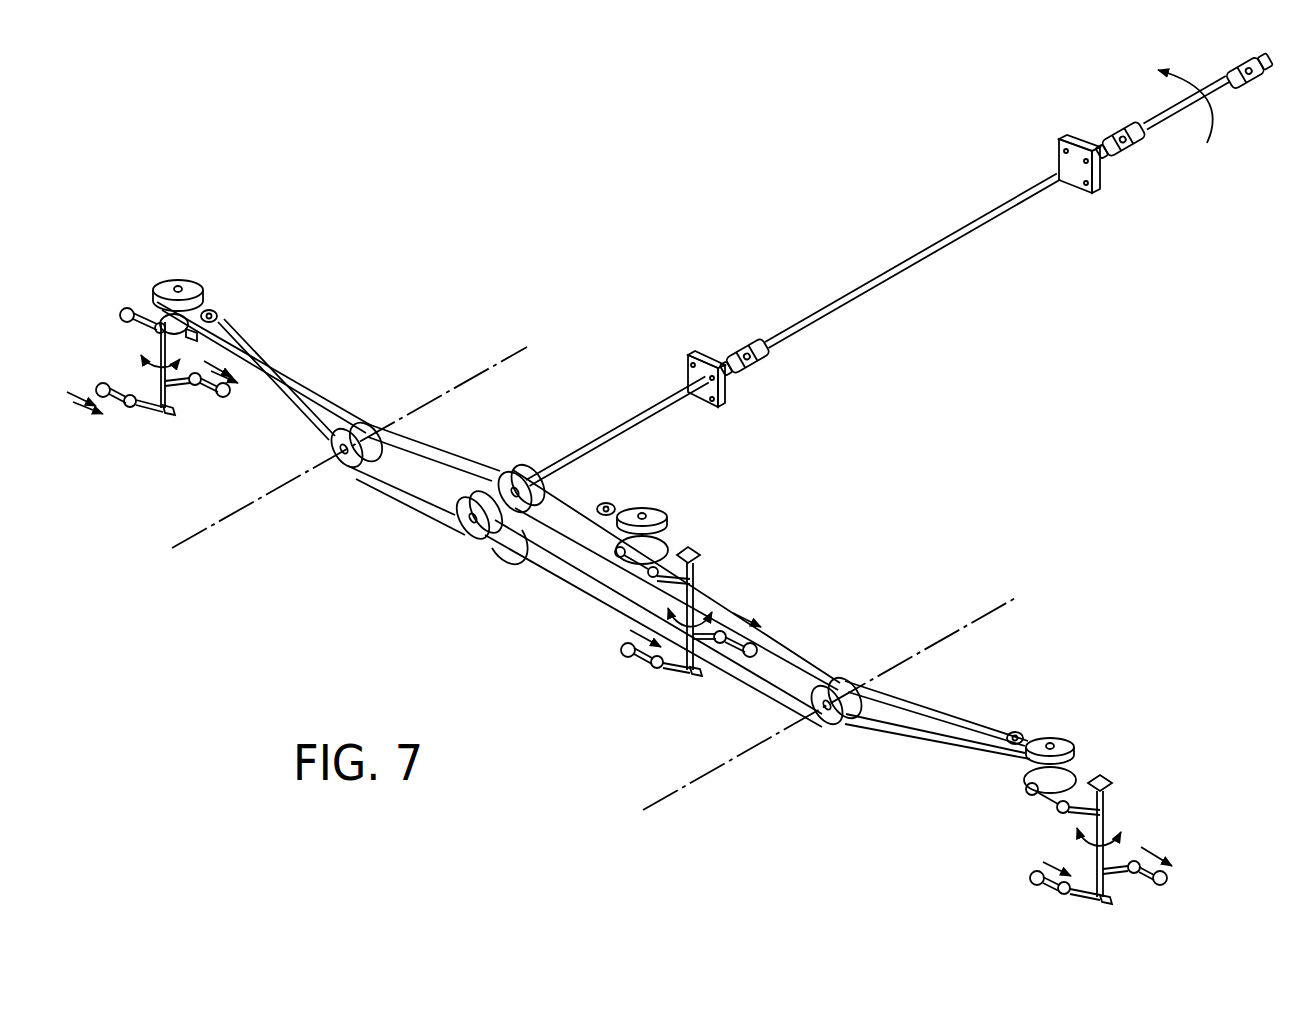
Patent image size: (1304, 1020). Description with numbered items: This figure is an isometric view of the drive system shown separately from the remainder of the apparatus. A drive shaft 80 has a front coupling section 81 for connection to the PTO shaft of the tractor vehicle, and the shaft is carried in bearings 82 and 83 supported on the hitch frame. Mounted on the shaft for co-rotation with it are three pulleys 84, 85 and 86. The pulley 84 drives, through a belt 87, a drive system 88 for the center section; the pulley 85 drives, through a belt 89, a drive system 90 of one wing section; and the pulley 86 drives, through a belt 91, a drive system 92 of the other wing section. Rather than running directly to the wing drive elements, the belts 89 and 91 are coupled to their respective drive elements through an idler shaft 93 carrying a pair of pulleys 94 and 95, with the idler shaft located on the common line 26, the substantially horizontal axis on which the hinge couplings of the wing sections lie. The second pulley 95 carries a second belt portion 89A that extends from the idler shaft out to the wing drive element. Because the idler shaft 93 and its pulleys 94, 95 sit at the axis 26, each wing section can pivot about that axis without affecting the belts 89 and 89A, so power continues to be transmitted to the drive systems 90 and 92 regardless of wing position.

The common line 26 is at (475, 366).
The drive shaft 80 is at (855, 275).
The front coupling section 81 is at (1256, 92).
The bearing 82 is at (726, 400).
The bearing 83 is at (1060, 156).
The pulley 84 is at (508, 470).
The pulley 85 is at (477, 538).
The pulley 86 is at (530, 550).
The belt 87 is at (563, 497).
The drive system 88 is at (678, 535).
The belt 89 is at (420, 507).
The second belt portion 89A is at (287, 373).
The drive system 90 is at (225, 286).
The belt 91 is at (600, 597).
The drive system 92 is at (1082, 737).
The idler shaft 93 is at (343, 472).
The pulley 94 is at (320, 440).
The second pulley 95 is at (372, 423).